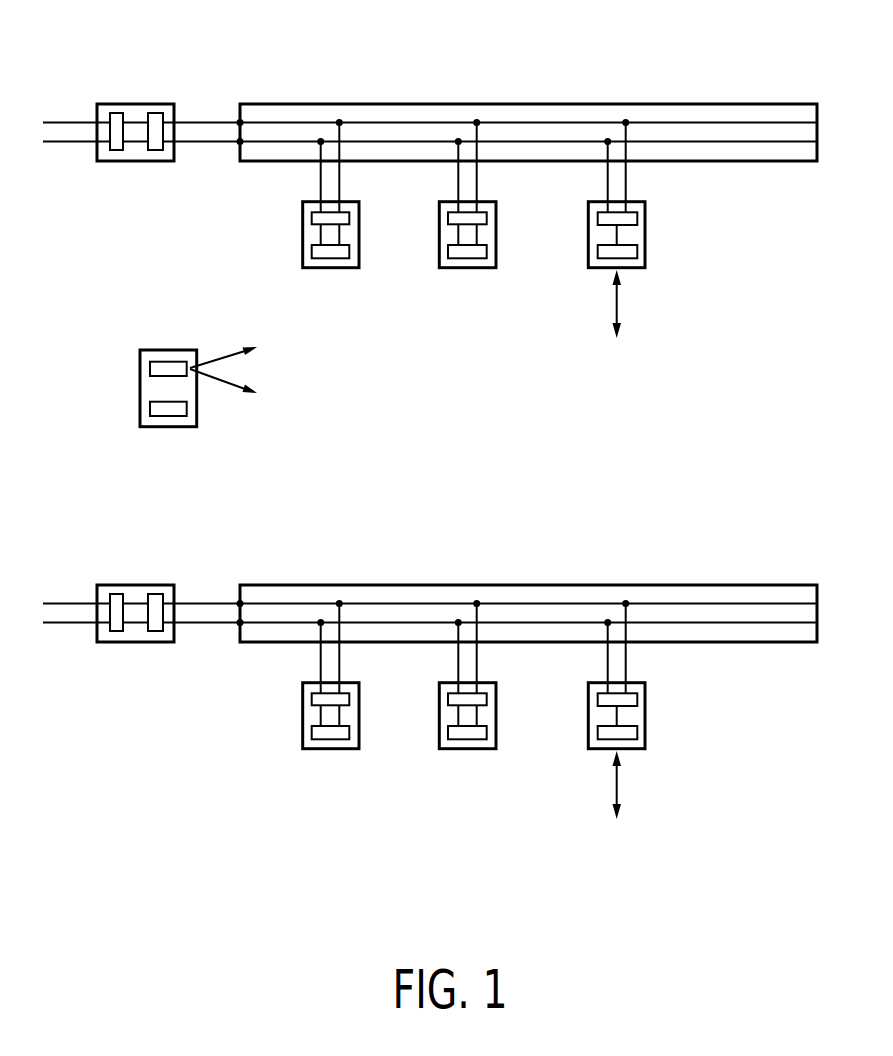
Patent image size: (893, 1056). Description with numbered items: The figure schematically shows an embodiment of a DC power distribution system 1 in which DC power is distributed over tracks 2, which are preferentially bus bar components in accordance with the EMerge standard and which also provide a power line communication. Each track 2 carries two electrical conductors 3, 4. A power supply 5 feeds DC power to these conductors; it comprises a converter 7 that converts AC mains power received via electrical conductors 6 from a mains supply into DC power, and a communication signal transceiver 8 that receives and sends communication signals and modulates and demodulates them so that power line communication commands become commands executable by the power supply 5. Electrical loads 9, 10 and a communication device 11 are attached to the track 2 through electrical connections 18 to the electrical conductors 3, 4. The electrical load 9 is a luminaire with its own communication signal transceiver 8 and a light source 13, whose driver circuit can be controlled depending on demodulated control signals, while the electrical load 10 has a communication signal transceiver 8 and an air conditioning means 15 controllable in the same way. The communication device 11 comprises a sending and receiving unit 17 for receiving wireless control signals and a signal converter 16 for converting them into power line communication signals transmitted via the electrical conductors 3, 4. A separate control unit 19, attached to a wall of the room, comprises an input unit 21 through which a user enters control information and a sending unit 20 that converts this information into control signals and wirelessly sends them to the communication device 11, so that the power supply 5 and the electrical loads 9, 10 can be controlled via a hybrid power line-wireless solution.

The DC power distribution system 1 is at (251, 858).
The track 2 is at (779, 104).
The electrical conductor 3 is at (722, 122).
The electrical conductor 4 is at (745, 142).
The power supply 5 is at (158, 104).
The electrical conductor 6 is at (62, 160).
The converter 7 is at (118, 152).
The communication signal transceiver 8 is at (158, 152).
The electrical load 9 is at (359, 267).
The electrical load 10 is at (496, 267).
The communication device 11 is at (645, 267).
The light source 13 is at (349, 252).
The air conditioning means 15 is at (486, 252).
The signal converter 16 is at (637, 218).
The sending and receiving unit 17 is at (637, 252).
The electrical connection 18 is at (287, 179).
The control unit 19 is at (178, 350).
The sending unit 20 is at (150, 370).
The input unit 21 is at (150, 410).